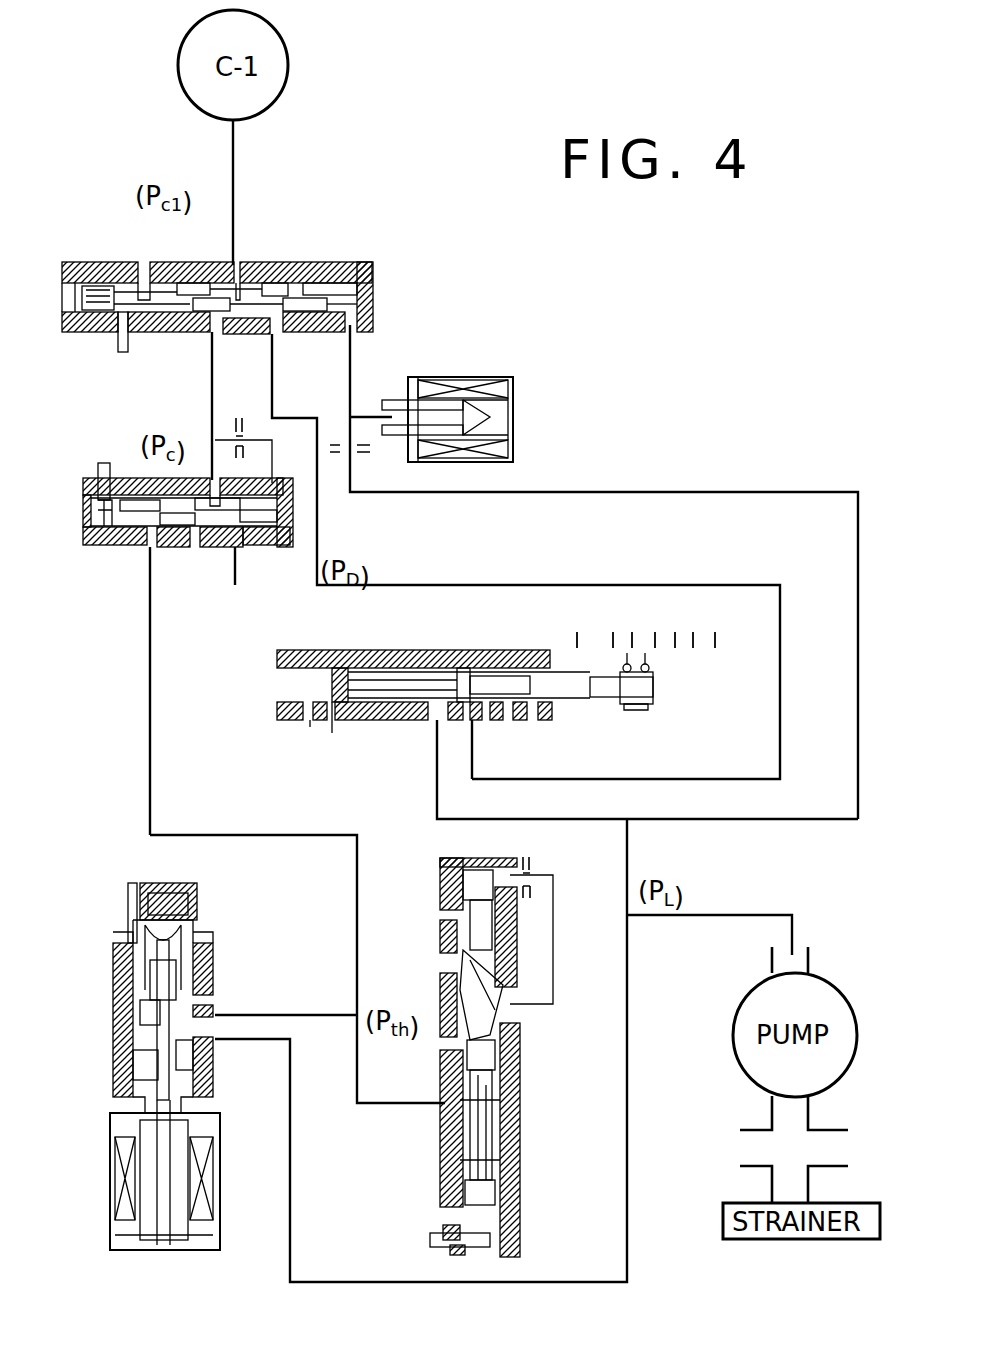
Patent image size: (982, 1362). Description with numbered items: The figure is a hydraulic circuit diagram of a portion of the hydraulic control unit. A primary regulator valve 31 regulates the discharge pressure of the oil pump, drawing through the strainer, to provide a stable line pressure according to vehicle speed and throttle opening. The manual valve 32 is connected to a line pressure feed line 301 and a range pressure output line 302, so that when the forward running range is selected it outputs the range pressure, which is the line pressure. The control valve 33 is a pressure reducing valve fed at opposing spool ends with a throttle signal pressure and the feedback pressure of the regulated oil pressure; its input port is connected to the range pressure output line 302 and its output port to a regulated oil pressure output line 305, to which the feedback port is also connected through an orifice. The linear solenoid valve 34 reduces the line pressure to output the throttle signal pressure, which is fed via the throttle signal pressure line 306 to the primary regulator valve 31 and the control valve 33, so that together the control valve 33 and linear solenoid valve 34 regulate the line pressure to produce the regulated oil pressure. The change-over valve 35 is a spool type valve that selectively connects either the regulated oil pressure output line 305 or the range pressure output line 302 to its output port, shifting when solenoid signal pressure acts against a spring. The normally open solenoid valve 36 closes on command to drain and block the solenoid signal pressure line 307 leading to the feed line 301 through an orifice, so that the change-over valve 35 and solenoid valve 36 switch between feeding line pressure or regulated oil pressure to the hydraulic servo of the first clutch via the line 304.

The primary regulator valve 31 is at (434, 855).
The manual valve 32 is at (665, 700).
The C-1 control valve 33 is at (113, 565).
The linear solenoid valve 34 is at (178, 1262).
The C-1 change-over valve 35 is at (383, 268).
The solenoid valve 36 is at (520, 412).
The line pressure feed line 301 is at (545, 820).
The range pressure output line 302 is at (522, 575).
The line 304 is at (236, 190).
The regulated oil pressure output line 305 is at (207, 394).
The throttle signal pressure line 306 is at (343, 950).
The solenoid signal pressure line 307 is at (355, 348).